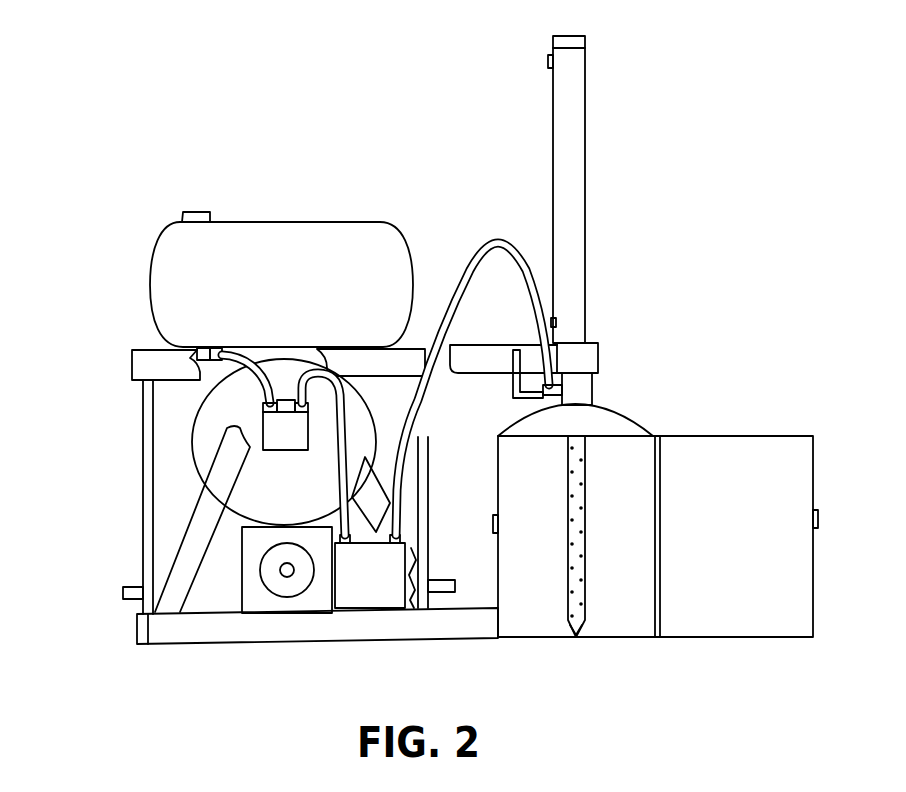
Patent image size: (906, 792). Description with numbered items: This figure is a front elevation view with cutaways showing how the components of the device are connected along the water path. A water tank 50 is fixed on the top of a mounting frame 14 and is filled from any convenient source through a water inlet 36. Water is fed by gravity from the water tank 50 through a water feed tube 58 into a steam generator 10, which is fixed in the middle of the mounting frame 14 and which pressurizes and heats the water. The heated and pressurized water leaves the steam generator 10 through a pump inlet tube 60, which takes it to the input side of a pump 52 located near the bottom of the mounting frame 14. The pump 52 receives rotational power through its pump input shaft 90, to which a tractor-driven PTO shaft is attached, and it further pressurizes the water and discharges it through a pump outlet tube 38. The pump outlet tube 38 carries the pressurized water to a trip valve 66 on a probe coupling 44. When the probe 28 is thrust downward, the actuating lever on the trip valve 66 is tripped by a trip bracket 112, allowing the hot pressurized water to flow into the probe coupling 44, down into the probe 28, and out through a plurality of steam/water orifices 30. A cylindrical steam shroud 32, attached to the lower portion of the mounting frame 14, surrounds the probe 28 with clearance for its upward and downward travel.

The steam generator 10 is at (250, 506).
The mounting frame 14 is at (165, 627).
The probe 28 is at (590, 585).
The steam/water orifices 30 is at (576, 585).
The steam shroud 32 is at (770, 436).
The water inlet 36 is at (183, 216).
The pump outlet tube 38 is at (481, 252).
The probe coupling 44 is at (595, 386).
The water tank 50 is at (284, 238).
The pump 52 is at (350, 585).
The water feed tube 58 is at (258, 379).
The pump inlet tube 60 is at (347, 493).
The trip valve 66 is at (545, 407).
The pump input shaft 90 is at (287, 571).
The trip bracket 112 is at (513, 392).